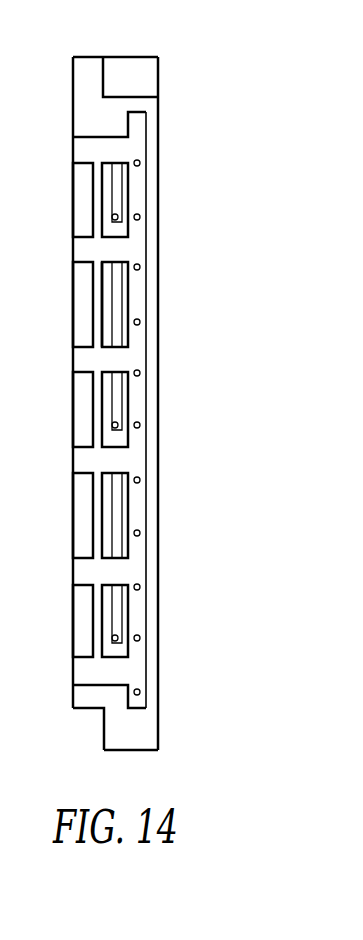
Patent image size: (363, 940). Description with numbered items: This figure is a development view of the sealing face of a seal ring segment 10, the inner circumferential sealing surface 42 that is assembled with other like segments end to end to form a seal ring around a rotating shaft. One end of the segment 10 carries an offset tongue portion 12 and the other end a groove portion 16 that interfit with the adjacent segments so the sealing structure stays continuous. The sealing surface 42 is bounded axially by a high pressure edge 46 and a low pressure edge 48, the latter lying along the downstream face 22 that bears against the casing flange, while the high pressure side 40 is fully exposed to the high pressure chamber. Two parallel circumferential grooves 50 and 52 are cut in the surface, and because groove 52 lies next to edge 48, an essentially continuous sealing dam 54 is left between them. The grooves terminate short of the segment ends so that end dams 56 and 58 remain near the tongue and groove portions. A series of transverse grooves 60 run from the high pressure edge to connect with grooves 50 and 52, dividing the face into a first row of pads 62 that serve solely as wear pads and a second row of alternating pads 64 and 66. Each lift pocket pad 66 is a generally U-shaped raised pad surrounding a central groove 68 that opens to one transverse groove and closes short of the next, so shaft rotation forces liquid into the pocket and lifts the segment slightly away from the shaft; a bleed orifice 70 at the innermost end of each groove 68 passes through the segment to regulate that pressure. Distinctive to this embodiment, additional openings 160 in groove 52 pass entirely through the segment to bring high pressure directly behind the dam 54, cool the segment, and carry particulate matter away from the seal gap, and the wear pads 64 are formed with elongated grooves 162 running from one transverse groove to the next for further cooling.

The seal ring segment 10 is at (228, 272).
The offset tongue portion 12 is at (123, 752).
The groove portion 16 is at (128, 77).
The downstream face 22 is at (152, 598).
The high pressure side 40 is at (72, 128).
The sealing surface 42 is at (82, 360).
The high pressure edge 46 is at (78, 437).
The low pressure edge 48 is at (158, 724).
The circumferential groove 50 is at (100, 280).
The circumferential groove 52 is at (135, 364).
The sealing dam 54 is at (140, 566).
The end dam 56 is at (90, 80).
The end dam 58 is at (110, 733).
The transverse groove 60 is at (82, 250).
The wear pad 62 is at (80, 190).
The wear pad 64 is at (141, 322).
The lift pocket pad 66 is at (128, 200).
The central groove 68 is at (116, 183).
The bleed orifice 70 is at (118, 215).
The additional opening 160 is at (139, 160).
The elongated groove 162 is at (120, 305).